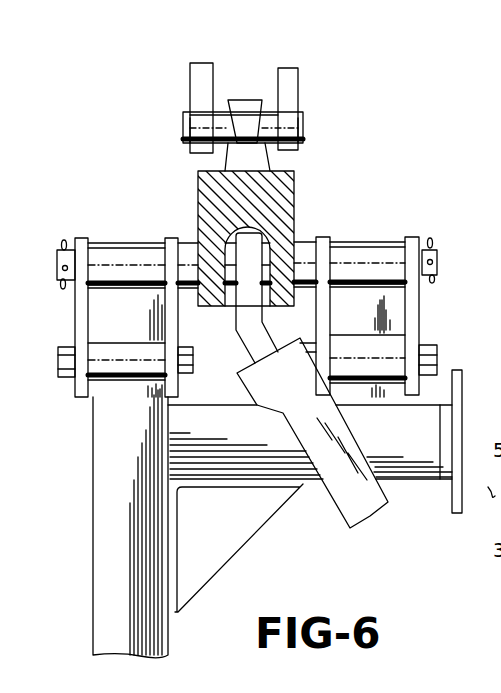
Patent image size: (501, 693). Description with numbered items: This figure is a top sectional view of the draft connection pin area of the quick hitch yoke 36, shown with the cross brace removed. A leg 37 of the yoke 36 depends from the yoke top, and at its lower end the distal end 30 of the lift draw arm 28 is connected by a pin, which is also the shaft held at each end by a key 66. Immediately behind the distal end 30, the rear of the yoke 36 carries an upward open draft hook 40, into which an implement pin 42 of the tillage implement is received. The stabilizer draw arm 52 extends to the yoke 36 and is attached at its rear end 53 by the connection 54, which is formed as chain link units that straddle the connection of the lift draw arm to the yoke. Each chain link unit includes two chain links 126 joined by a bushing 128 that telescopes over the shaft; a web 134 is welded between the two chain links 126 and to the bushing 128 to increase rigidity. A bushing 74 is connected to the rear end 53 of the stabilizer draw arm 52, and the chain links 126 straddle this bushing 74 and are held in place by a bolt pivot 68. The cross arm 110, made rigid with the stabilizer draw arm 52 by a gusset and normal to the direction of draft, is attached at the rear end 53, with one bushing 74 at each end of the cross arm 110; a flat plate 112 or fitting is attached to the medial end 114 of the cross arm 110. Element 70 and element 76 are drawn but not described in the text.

The lift draw arm 28 is at (312, 433).
The distal end 30 is at (263, 331).
The quick hitch yoke 36 is at (303, 178).
The leg 37 is at (207, 214).
The draft hook 40 is at (249, 147).
The implement pin 42 is at (298, 127).
The stabilizer draw arm 52 is at (74, 525).
The rear end 53 is at (96, 413).
The connection 54 is at (88, 237).
The key 66 is at (62, 288).
The bolt pivot 68 is at (126, 287).
The side plate 70 is at (177, 312).
The bushing 74 is at (137, 347).
The nut 76 is at (195, 370).
The cross arm 110 is at (406, 480).
The flat plate 112 is at (464, 390).
The medial end 114 is at (440, 483).
The chain link 126 is at (420, 325).
The bushing 128 is at (122, 243).
The web 134 is at (397, 307).